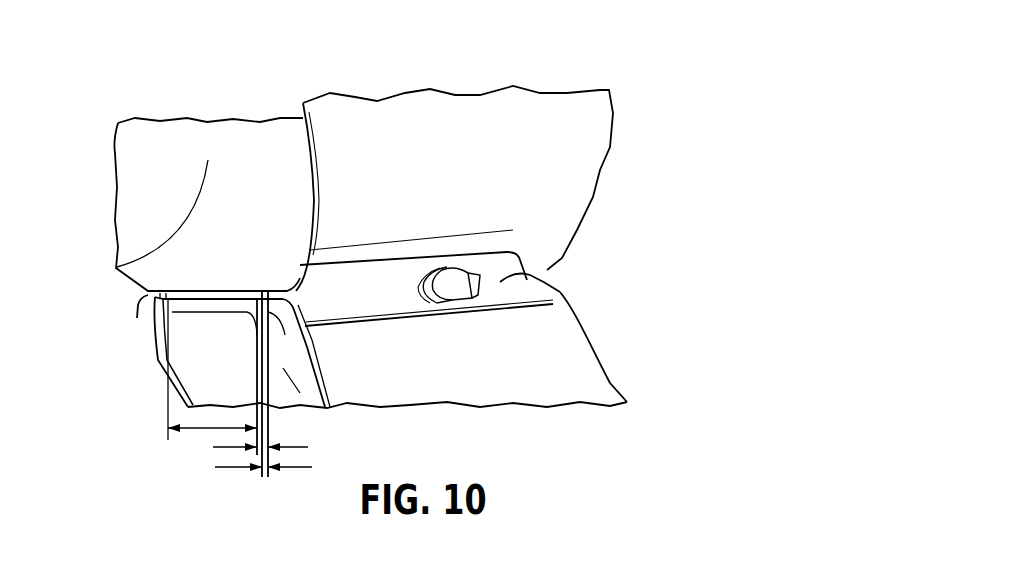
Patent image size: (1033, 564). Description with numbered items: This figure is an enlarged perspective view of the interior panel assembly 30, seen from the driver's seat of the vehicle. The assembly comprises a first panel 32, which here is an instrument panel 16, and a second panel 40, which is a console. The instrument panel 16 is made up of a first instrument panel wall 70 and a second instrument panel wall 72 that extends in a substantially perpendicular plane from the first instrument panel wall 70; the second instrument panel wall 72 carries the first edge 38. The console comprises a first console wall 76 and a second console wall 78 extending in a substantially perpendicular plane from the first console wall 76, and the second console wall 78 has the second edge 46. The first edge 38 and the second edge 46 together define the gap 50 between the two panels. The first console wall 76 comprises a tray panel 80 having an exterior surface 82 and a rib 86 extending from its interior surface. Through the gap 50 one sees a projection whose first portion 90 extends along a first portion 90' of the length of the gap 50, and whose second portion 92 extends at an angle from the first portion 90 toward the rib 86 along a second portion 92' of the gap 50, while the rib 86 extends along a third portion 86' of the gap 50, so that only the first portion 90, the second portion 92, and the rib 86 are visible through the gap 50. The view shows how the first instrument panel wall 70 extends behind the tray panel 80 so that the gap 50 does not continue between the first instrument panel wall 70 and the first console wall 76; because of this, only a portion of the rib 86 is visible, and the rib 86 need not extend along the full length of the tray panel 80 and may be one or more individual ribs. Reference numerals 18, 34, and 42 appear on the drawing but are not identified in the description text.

The instrument panel 16 is at (137, 137).
The second panel 18 is at (512, 374).
The interior panel assembly 30 is at (655, 121).
The first panel 32 is at (258, 137).
The outer surface of first panel 34 is at (247, 182).
The first edge 38 is at (207, 290).
The second panel 40 is at (300, 368).
The edge region 42 is at (279, 361).
The second edge 46 is at (227, 300).
The gap 50 is at (137, 318).
The first instrument panel wall 70 is at (526, 113).
The second instrument panel wall 72 is at (218, 138).
The first console wall 76 is at (572, 360).
The second console wall 78 is at (313, 367).
The tray panel 80 is at (528, 276).
The exterior surface 82 is at (341, 301).
The rib 86 is at (280, 334).
The first portion 90 is at (219, 335).
The second portion 92 is at (240, 325).
The first portion of the length of the gap 90' is at (194, 412).
The second portion of the gap 92' is at (256, 493).
The third portion of the gap 86' is at (267, 504).